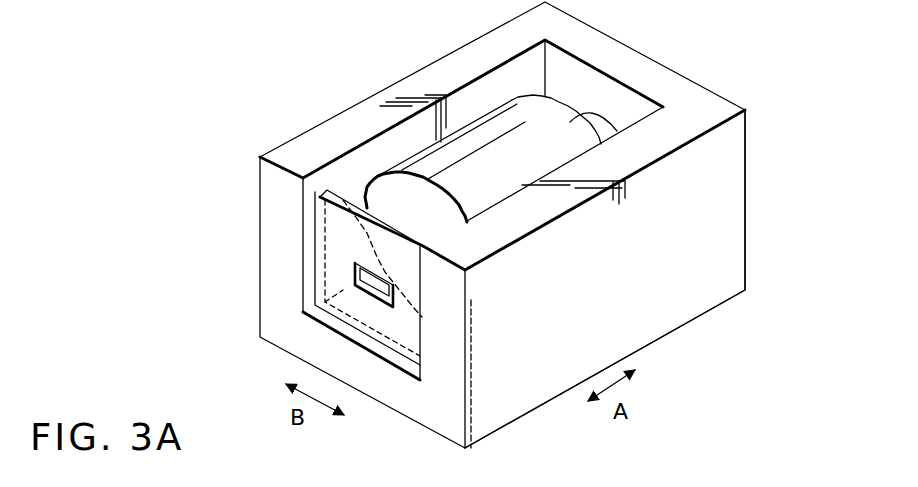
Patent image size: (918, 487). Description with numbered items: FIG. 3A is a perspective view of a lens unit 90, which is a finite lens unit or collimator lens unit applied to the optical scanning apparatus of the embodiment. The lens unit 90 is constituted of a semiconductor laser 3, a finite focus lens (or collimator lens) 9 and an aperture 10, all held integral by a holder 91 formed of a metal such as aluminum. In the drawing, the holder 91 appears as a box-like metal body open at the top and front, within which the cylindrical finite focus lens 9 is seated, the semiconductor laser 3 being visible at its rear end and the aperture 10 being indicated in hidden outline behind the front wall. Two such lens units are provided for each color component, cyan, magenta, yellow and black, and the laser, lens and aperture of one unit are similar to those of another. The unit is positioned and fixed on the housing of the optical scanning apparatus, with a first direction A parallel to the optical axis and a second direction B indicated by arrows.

The lens unit 90 is at (368, 74).
The holder 91 is at (743, 200).
The finite focus lens 9 is at (525, 120).
The semiconductor laser 3 is at (590, 113).
The aperture 10 is at (343, 199).